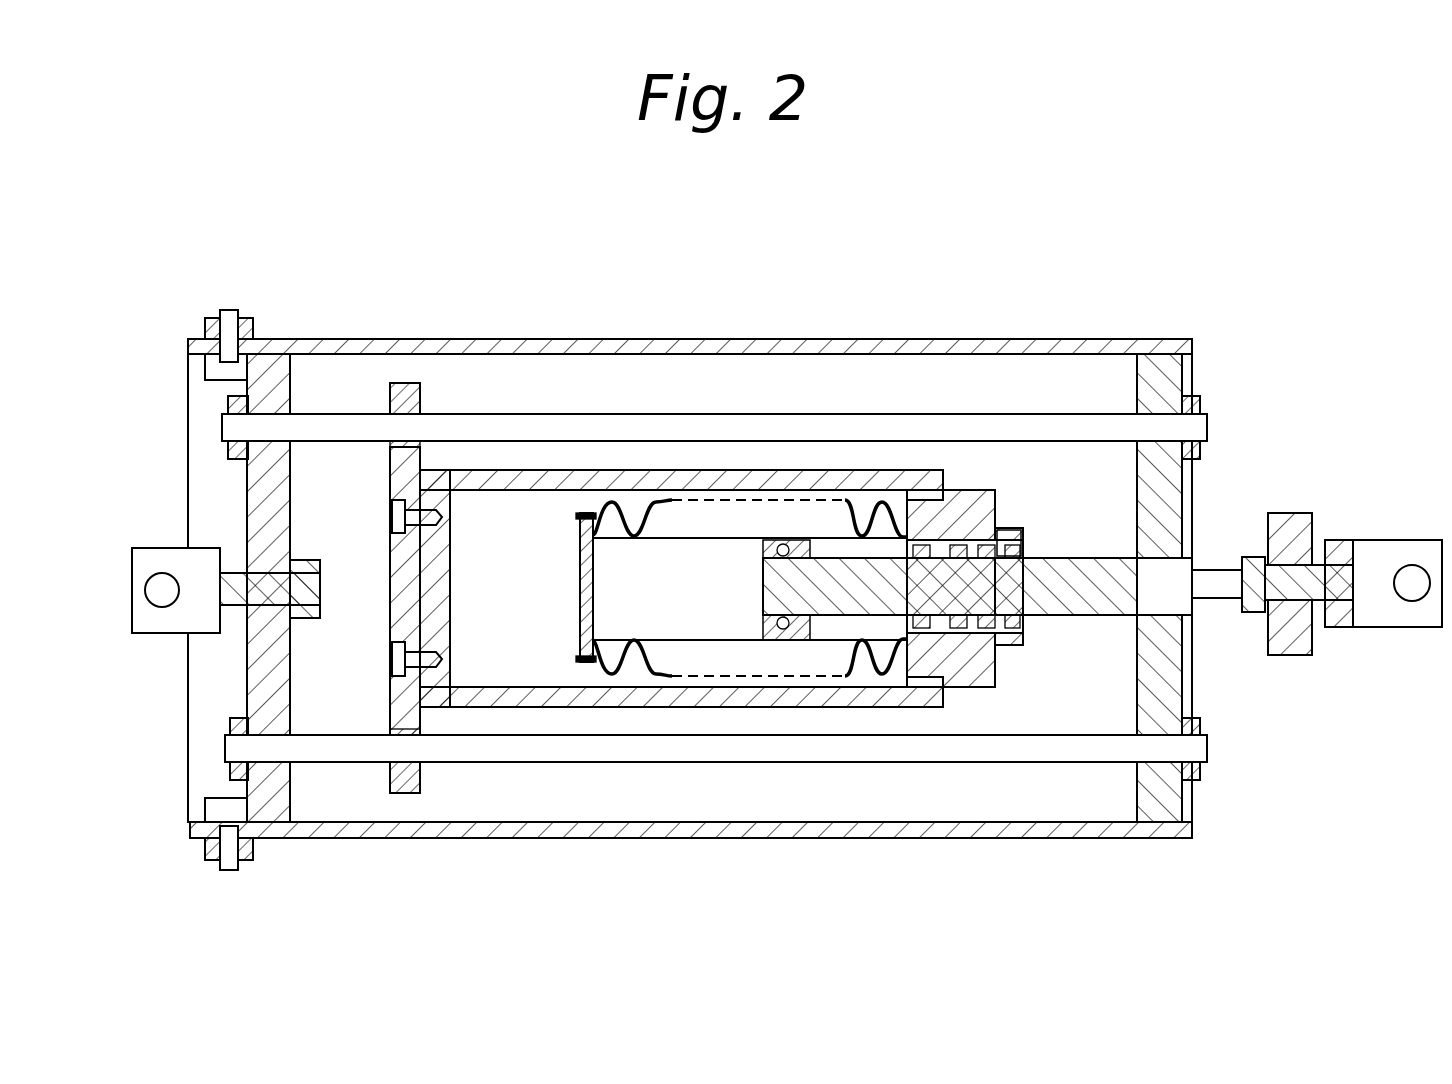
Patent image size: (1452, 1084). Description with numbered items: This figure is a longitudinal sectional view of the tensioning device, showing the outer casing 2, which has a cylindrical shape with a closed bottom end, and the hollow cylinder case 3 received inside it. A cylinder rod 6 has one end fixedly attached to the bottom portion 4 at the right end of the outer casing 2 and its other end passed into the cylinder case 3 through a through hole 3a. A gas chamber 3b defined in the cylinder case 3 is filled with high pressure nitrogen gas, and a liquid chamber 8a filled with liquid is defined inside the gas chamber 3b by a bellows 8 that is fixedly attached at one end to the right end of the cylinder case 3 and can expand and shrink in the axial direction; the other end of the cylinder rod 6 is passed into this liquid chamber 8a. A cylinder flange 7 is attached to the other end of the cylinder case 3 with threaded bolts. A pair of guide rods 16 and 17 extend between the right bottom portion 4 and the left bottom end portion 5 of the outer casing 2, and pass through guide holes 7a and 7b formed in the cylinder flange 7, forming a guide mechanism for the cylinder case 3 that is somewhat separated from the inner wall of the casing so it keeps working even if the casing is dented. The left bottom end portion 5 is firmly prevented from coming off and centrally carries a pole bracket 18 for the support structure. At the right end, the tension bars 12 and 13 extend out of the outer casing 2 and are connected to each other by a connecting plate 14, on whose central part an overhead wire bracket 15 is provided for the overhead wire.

The outer casing 2 is at (920, 343).
The cylinder case 3 is at (905, 702).
The through hole 3a is at (1000, 572).
The gas chamber 3b is at (535, 586).
The bottom portion 4 is at (1143, 378).
The left bottom end portion 5 is at (288, 374).
The cylinder rod 6 is at (1074, 610).
The cylinder flange 7 is at (420, 455).
The guide hole 7a is at (402, 440).
The guide hole 7b is at (405, 738).
The bellows 8 is at (630, 668).
The liquid chamber 8a is at (750, 589).
The tension bar 12 is at (1281, 539).
The tension bar 13 is at (1210, 578).
The connecting plate 14 is at (1280, 655).
The overhead wire bracket 15 is at (1406, 627).
The guide rod 16 is at (608, 415).
The guide rod 17 is at (1048, 755).
The pole bracket 18 is at (146, 586).